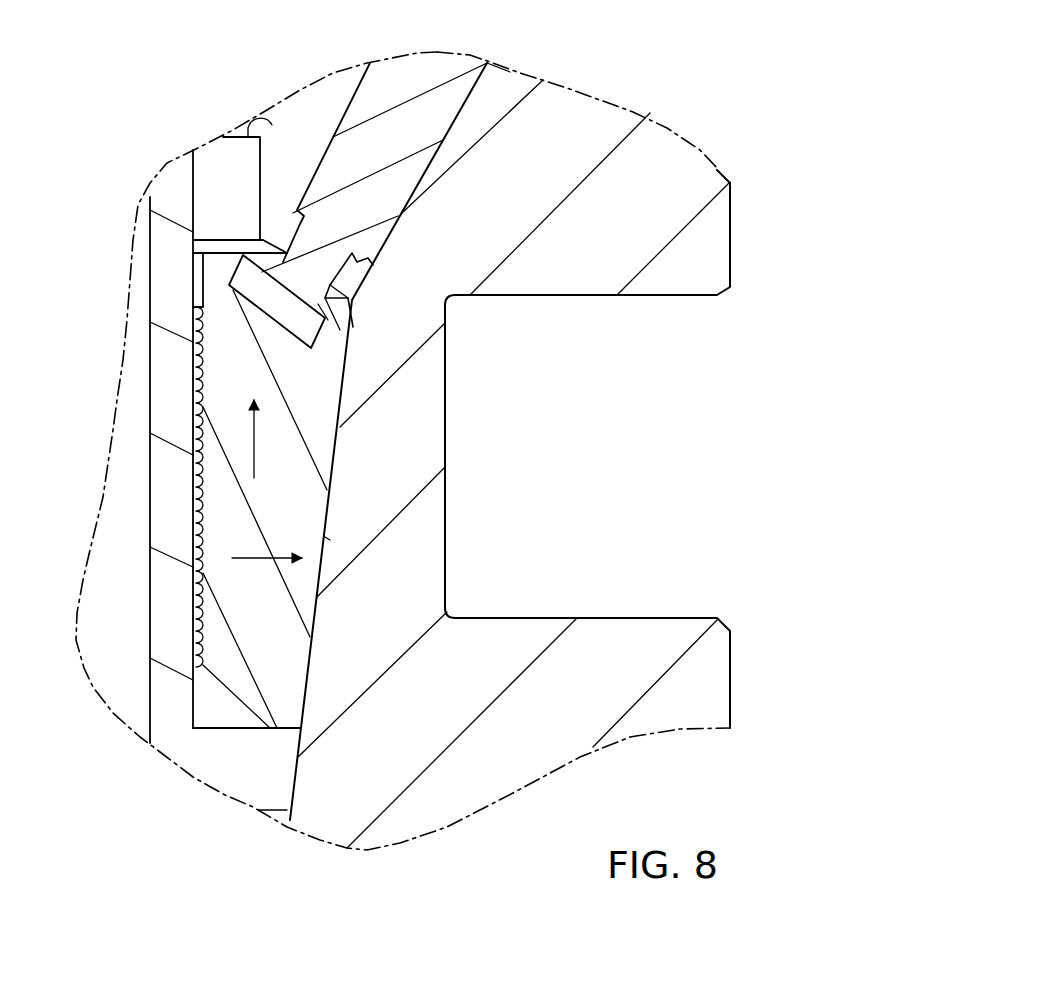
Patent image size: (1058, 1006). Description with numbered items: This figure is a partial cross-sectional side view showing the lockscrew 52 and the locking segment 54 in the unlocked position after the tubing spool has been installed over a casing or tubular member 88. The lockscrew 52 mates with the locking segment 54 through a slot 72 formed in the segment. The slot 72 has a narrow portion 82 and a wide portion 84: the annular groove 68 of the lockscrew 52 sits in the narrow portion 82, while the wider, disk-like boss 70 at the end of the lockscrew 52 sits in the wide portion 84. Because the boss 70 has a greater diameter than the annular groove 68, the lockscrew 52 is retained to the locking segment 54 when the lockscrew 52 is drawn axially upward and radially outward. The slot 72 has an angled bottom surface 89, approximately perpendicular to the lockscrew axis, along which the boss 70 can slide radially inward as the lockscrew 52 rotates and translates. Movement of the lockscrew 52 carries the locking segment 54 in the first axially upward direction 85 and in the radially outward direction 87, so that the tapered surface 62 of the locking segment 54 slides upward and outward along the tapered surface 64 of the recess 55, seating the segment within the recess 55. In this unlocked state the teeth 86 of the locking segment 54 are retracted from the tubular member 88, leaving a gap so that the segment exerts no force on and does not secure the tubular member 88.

The lockscrew 52 is at (427, 70).
The annular groove 68 is at (295, 210).
The wide portion 84 is at (220, 270).
The slot 72 is at (233, 287).
The angled bottom surface 89 is at (305, 328).
The teeth 86 is at (195, 406).
The first axially upward direction 85 is at (253, 440).
The tubular member 88 is at (172, 508).
The radially outward direction 87 is at (258, 562).
The tapered surface of the recess 64 is at (308, 667).
The recess 55 is at (217, 712).
The boss 70 is at (333, 313).
The narrow portion 82 is at (335, 350).
The locking segment 54 is at (303, 508).
The tapered surface of the locking segment 62 is at (325, 537).